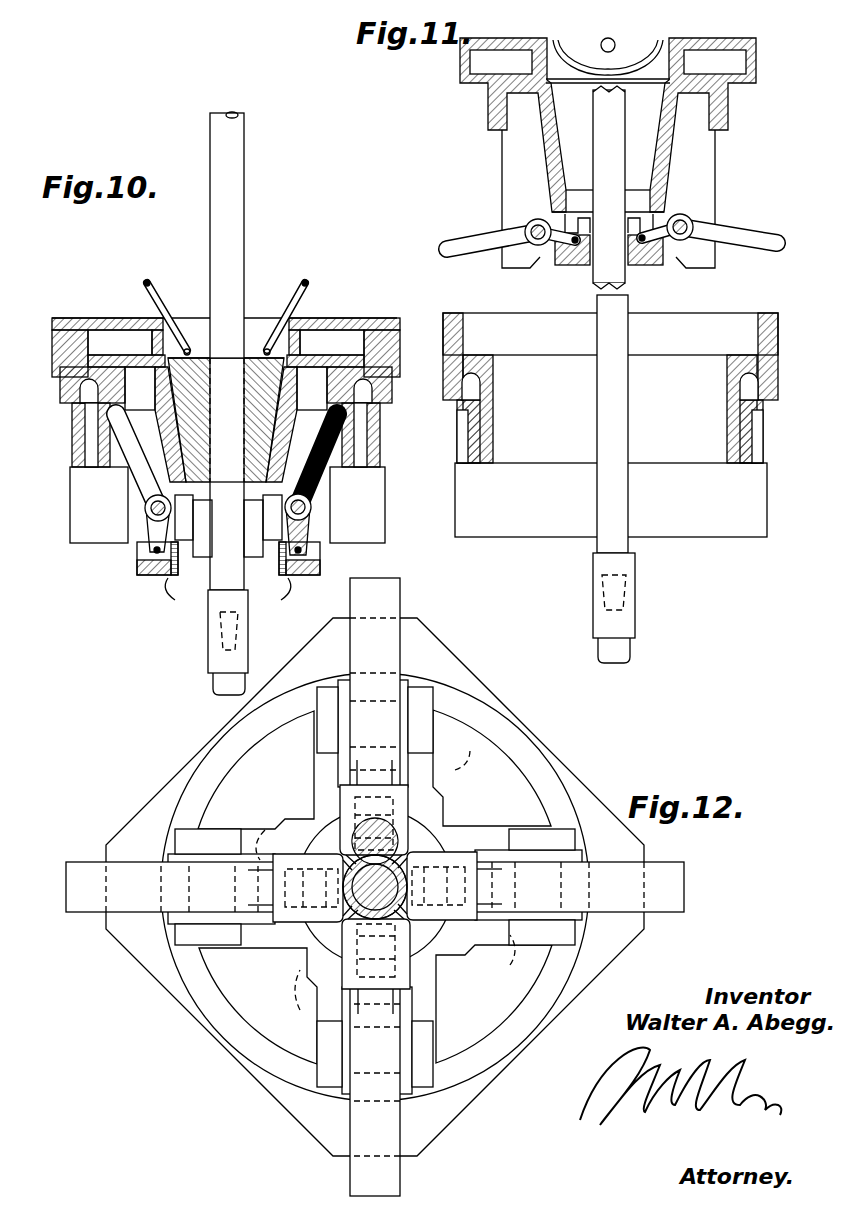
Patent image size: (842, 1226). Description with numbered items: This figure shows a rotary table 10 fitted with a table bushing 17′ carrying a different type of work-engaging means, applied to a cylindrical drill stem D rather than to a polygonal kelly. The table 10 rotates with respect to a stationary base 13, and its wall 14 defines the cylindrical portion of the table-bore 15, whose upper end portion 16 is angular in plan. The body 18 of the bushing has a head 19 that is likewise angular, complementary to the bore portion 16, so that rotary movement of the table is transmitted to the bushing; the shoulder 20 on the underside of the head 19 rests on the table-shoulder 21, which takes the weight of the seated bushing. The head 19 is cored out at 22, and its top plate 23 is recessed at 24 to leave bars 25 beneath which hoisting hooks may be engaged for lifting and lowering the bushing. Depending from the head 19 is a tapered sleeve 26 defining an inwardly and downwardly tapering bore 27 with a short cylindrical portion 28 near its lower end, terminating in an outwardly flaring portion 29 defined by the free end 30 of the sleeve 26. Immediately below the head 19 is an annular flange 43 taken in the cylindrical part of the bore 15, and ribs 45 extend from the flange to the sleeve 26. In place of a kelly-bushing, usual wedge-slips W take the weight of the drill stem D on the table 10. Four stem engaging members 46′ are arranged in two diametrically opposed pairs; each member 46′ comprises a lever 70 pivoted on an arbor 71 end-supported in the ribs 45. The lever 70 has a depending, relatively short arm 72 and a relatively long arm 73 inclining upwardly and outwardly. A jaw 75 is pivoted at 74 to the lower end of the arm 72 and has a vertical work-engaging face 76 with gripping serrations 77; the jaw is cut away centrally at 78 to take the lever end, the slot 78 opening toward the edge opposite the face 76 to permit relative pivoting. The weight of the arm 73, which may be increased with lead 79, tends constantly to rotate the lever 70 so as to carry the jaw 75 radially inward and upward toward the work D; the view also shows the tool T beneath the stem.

In FIG. 10, the rotary table 10 is at (62, 316).
In FIG. 11, the rotary table 10 is at (453, 312).
In FIG. 10, the stationary base 13 is at (372, 421).
In FIG. 11, the stationary base 13 is at (763, 431).
In FIG. 10, the wall 14 is at (98, 455).
In FIG. 11, the wall 14 is at (494, 416).
In FIG. 11, the table-bore 15 is at (545, 450).
In FIG. 10, the upper end portion of the bore 16 is at (372, 317).
In FIG. 11, the upper end portion of the bore 16 is at (507, 302).
In FIG. 10, the table bushing 17′ is at (107, 316).
In FIG. 11, the table bushing 17′ is at (521, 40).
In FIG. 12, the table bushing 17′ is at (199, 746).
In FIG. 11, the body 18 is at (713, 87).
In FIG. 10, the head 19 is at (325, 316).
In FIG. 11, the head 19 is at (753, 44).
In FIG. 10, the shoulder 20 is at (375, 360).
In FIG. 11, the shoulder 20 is at (740, 86).
In FIG. 12, the shoulder 20 is at (148, 830).
In FIG. 10, the table-shoulder 21 is at (100, 372).
In FIG. 11, the table-shoulder 21 is at (491, 358).
In FIG. 10, the cored-out portion 22 is at (113, 342).
In FIG. 11, the cored-out portion 22 is at (501, 62).
In FIG. 10, the top plate 23 is at (347, 318).
In FIG. 11, the top plate 23 is at (700, 40).
In FIG. 11, the recess 24 is at (628, 58).
In FIG. 11, the bars 25 is at (612, 40).
In FIG. 10, the sleeve 26 is at (226, 420).
In FIG. 11, the sleeve 26 is at (545, 128).
In FIG. 12, the sleeve 26 is at (312, 790).
In FIG. 10, the tapering bore 27 is at (226, 424).
In FIG. 11, the tapering bore 27 is at (572, 137).
In FIG. 10, the cylindrical bore portion 28 is at (228, 526).
In FIG. 11, the cylindrical bore portion 28 is at (581, 185).
In FIG. 11, the outwardly flaring bore portion 29 is at (641, 206).
In FIG. 12, the outwardly flaring bore portion 29 is at (320, 950).
In FIG. 11, the free end of sleeve 30 is at (662, 215).
In FIG. 12, the free end of sleeve 30 is at (305, 795).
In FIG. 10, the annular flange 43 is at (360, 388).
In FIG. 11, the annular flange 43 is at (490, 111).
In FIG. 12, the annular flange 43 is at (512, 740).
In FIG. 10, the ribs 45 is at (335, 548).
In FIG. 11, the ribs 45 is at (510, 167).
In FIG. 12, the ribs 45 is at (425, 735).
In FIG. 10, the stem engaging members 46′ is at (135, 487).
In FIG. 11, the stem engaging members 46′ is at (482, 228).
In FIG. 12, the stem engaging members 46′ is at (408, 671).
In FIG. 10, the lever 70 is at (148, 500).
In FIG. 11, the lever 70 is at (468, 250).
In FIG. 12, the lever 70 is at (383, 705).
In FIG. 10, the arbor 71 is at (150, 515).
In FIG. 11, the arbor 71 is at (538, 226).
In FIG. 12, the arbor 71 is at (425, 775).
In FIG. 10, the short arm 72 is at (150, 523).
In FIG. 11, the short arm 72 is at (555, 246).
In FIG. 12, the short arm 72 is at (422, 790).
In FIG. 10, the long arm 73 is at (128, 470).
In FIG. 11, the long arm 73 is at (446, 245).
In FIG. 12, the long arm 73 is at (395, 610).
In FIG. 10, the pivot 74 is at (142, 568).
In FIG. 11, the pivot 74 is at (645, 265).
In FIG. 12, the pivot 74 is at (350, 852).
In FIG. 10, the jaw 75 is at (152, 578).
In FIG. 11, the jaw 75 is at (572, 266).
In FIG. 12, the jaw 75 is at (400, 855).
In FIG. 10, the work-engaging face 76 is at (178, 565).
In FIG. 10, the gripping serrations 77 is at (185, 585).
In FIG. 11, the gripping serrations 77 is at (611, 274).
In FIG. 10, the slot 78 is at (160, 578).
In FIG. 10, the lead weight 79 is at (325, 497).
In FIG. 10, the drill stem D is at (230, 151).
In FIG. 11, the drill stem D is at (613, 124).
In FIG. 12, the drill stem D is at (393, 878).
In FIG. 10, the wedge-slips W is at (197, 357).
In FIG. 10, the tool T is at (200, 655).
In FIG. 11, the tool T is at (646, 587).